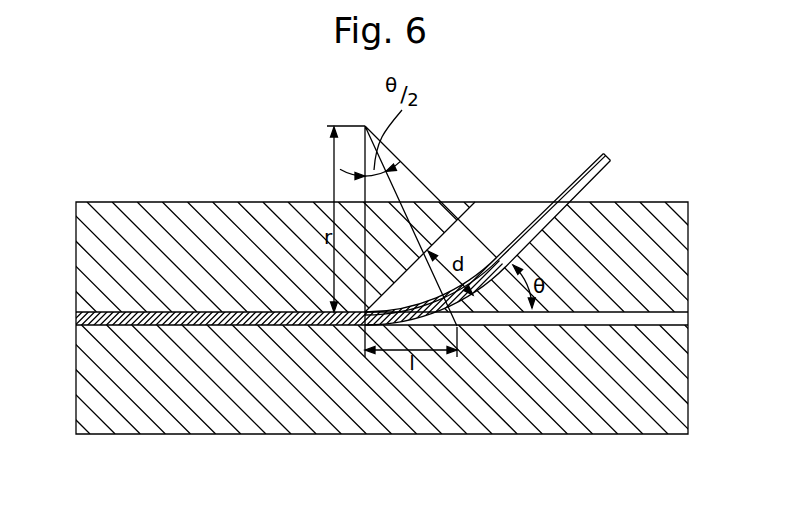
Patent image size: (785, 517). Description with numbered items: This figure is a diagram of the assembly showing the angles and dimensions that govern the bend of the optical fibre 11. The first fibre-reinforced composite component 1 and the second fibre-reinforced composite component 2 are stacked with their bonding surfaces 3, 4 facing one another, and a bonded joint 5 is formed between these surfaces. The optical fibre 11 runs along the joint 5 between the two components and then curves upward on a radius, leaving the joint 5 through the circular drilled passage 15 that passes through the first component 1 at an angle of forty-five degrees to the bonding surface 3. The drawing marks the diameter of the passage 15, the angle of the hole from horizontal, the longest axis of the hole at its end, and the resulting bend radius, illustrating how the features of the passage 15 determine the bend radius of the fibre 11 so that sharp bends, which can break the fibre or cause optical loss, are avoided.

The first fibre-reinforced composite component 1 is at (655, 202).
The second fibre-reinforced composite component 2 is at (642, 420).
The bonding surface of the first component 3 is at (653, 313).
The bonding surface of the second component 4 is at (663, 325).
The bonded joint 5 is at (78, 319).
The optical fibre 11 is at (591, 158).
The circular drilled passage 15 is at (495, 227).